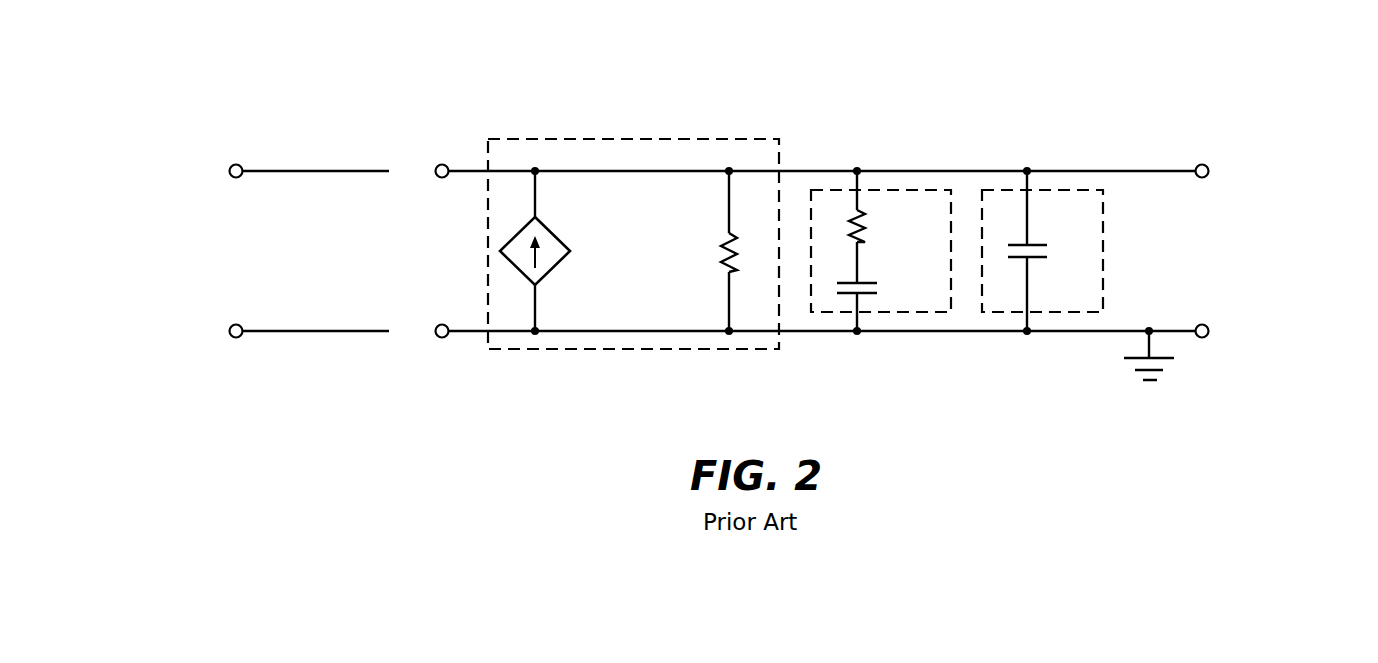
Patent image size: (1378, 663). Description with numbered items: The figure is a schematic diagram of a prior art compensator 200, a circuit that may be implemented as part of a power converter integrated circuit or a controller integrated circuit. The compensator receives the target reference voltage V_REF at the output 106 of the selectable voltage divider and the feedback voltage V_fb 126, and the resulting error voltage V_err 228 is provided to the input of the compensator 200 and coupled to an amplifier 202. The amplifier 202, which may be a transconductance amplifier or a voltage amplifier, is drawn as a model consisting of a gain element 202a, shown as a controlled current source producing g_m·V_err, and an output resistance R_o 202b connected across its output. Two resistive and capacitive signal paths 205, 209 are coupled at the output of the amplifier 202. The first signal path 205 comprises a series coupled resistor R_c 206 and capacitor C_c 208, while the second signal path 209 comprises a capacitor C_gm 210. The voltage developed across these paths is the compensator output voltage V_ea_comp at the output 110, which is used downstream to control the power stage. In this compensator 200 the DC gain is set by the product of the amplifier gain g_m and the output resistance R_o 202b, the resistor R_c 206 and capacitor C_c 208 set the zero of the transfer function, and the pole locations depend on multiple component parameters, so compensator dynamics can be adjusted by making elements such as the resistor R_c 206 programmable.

The compensator 200 is at (330, 55).
The output 106 is at (239, 163).
The feedback voltage 126 is at (237, 339).
The error voltage 228 is at (417, 253).
The amplifier 202 is at (717, 138).
The gain element 202a is at (553, 232).
The output resistance 202b is at (718, 250).
The signal path 205 is at (897, 313).
The resistor 206 is at (898, 210).
The capacitor 208 is at (848, 298).
The signal path 209 is at (1050, 315).
The capacitor 210 is at (1037, 245).
The output 110 is at (1250, 246).